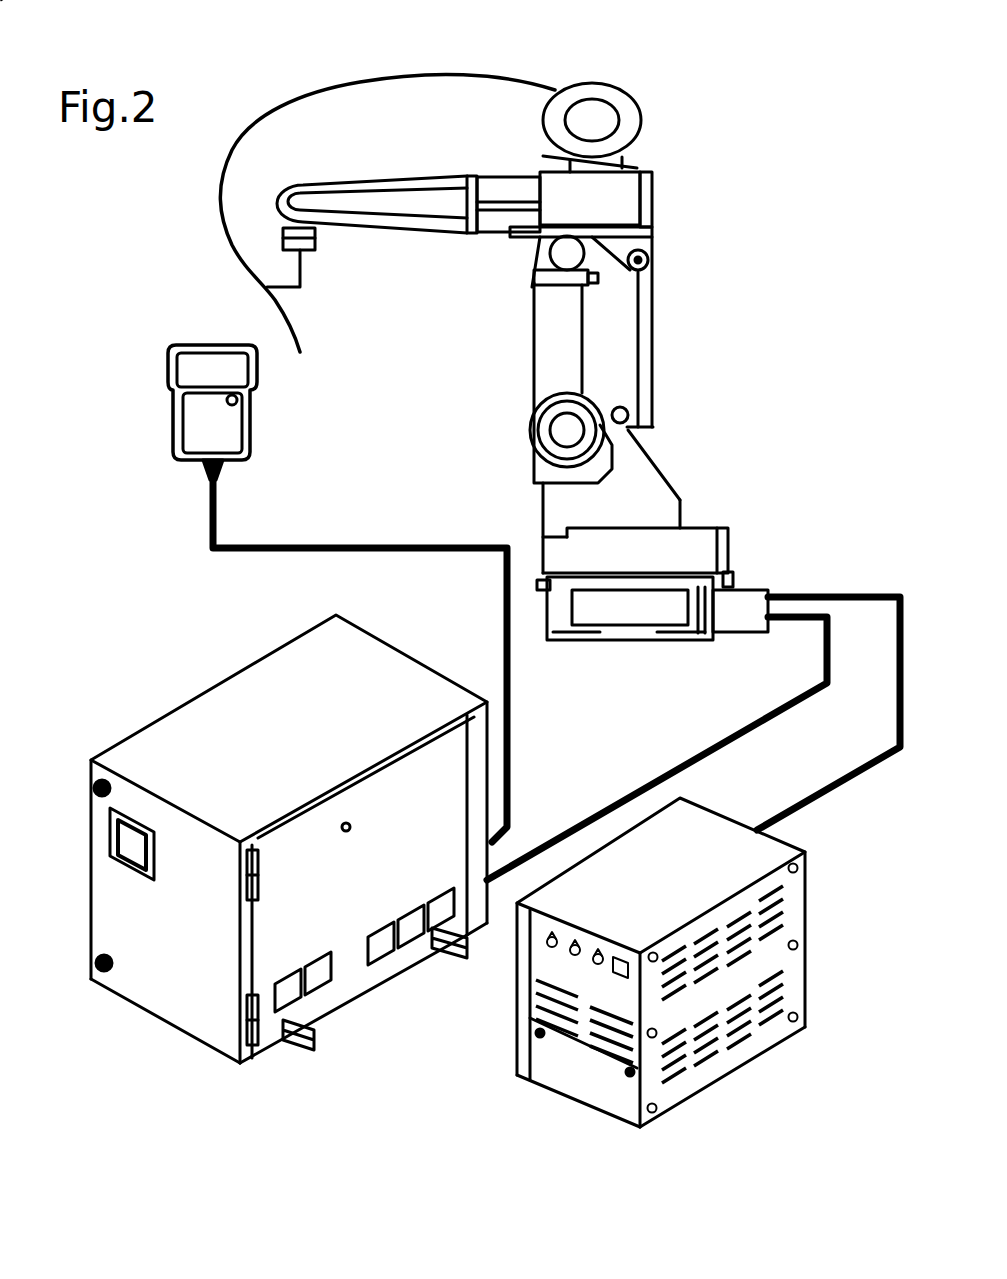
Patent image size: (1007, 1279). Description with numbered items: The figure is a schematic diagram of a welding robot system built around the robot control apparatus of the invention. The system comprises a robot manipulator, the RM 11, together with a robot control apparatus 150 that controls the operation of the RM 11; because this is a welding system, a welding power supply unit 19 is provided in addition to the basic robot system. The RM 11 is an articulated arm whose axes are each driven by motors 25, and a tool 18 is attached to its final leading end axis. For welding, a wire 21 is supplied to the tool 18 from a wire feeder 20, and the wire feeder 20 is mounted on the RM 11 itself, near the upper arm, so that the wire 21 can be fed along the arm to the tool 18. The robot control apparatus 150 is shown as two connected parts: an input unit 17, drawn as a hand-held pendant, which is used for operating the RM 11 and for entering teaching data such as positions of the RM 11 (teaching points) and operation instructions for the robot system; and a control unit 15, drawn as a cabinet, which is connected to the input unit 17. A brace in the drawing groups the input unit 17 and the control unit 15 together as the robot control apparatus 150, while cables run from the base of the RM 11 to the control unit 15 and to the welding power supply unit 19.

The RM 11 is at (689, 128).
The control unit 15 is at (242, 700).
The input unit 17 is at (198, 438).
The tool 18 is at (300, 345).
The welding power supply unit 19 is at (793, 915).
The wire feeder 20 is at (627, 95).
The wire 21 is at (490, 78).
The motor 25 is at (557, 193).
The robot control apparatus 150 is at (133, 543).